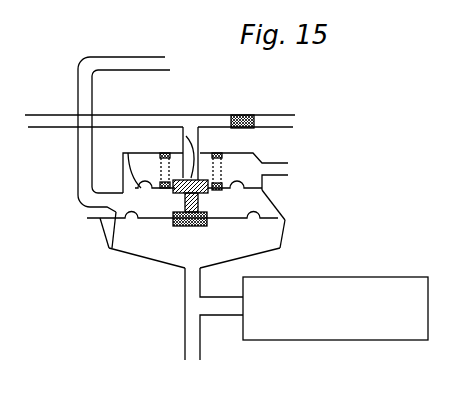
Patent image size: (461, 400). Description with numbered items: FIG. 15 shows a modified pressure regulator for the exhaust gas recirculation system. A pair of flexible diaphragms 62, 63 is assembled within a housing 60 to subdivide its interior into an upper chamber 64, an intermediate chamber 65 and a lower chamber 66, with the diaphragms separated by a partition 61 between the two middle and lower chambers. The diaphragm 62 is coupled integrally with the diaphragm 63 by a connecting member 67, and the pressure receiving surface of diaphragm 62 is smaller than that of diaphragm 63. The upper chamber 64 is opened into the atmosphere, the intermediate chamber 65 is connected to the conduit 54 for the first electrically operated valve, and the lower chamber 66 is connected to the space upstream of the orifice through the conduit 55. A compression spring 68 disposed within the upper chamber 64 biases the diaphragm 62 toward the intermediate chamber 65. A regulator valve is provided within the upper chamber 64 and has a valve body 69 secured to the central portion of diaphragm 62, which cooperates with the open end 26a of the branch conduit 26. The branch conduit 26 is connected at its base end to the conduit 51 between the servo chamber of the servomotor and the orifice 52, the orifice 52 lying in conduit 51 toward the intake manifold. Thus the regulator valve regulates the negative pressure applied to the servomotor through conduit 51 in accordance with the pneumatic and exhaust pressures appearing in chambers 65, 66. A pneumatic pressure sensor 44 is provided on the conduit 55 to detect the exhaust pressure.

The conduit 54 is at (121, 58).
The conduit 51 is at (140, 118).
The orifice 52 is at (252, 115).
The flexible diaphragm 62 is at (126, 154).
The branch conduit 26 is at (200, 135).
The open end of branch conduit 26a is at (183, 144).
The upper chamber 64 is at (252, 158).
The compression spring 68 is at (163, 189).
The valve body 69 is at (215, 191).
The connecting member 67 is at (190, 228).
The partition wall 61 is at (285, 214).
The intermediate chamber 65 is at (279, 200).
The lower chamber 66 is at (283, 246).
The flexible diaphragm 63 is at (104, 244).
The housing 60 is at (148, 268).
The conduit 55 is at (185, 330).
The pneumatic pressure sensor 44 is at (346, 277).